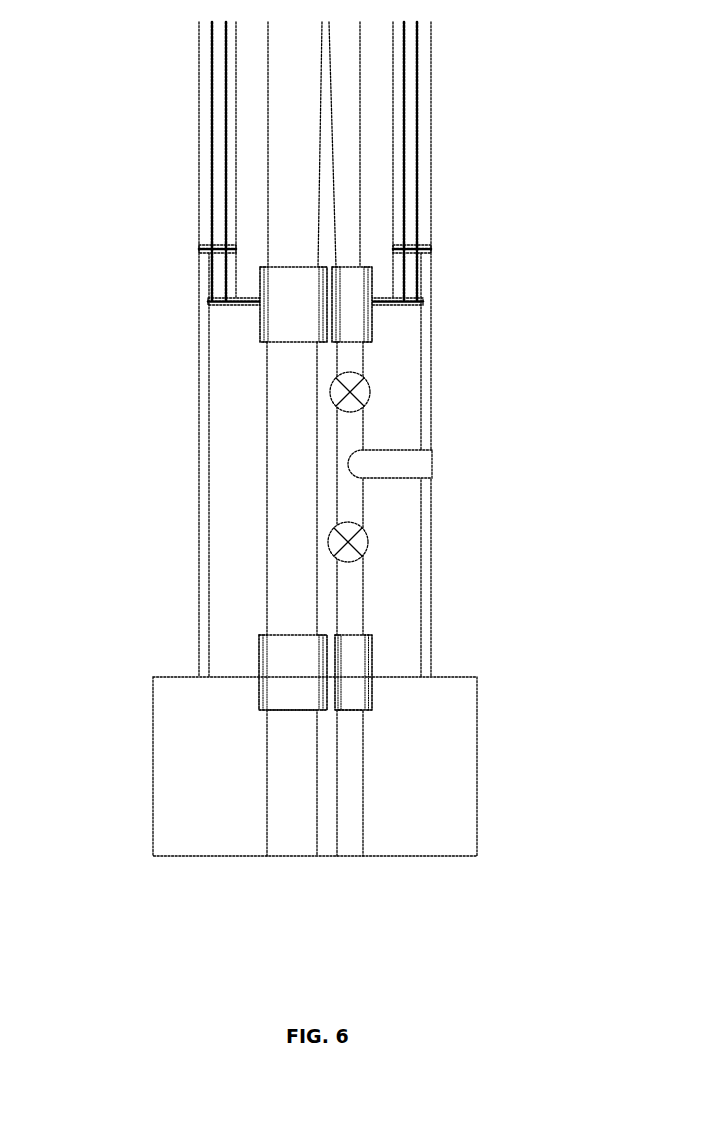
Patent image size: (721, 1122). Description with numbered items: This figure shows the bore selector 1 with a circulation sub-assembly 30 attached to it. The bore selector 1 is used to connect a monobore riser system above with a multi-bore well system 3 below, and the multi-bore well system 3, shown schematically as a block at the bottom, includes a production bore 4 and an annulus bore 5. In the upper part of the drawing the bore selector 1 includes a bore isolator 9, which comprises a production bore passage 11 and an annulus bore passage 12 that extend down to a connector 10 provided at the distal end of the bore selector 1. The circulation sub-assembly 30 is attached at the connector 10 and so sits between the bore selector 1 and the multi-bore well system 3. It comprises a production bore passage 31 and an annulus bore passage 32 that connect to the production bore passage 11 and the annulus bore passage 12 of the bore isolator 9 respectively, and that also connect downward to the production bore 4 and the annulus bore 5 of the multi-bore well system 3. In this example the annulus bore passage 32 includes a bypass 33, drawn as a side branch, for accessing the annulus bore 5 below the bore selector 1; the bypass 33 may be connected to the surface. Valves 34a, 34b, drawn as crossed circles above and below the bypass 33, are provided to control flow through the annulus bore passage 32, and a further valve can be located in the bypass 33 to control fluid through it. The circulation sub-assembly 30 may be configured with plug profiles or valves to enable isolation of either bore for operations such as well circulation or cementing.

The bore selector 1 is at (468, 110).
The multi-bore well system 3 is at (172, 765).
The production bore 4 is at (292, 818).
The annulus bore 5 is at (344, 827).
The bore isolator 9 is at (248, 130).
The connector 10 is at (200, 282).
The production bore passage 11 is at (250, 205).
The annulus bore passage 12 is at (353, 182).
The circulation sub-assembly 30 is at (135, 462).
The production bore passage 31 is at (277, 400).
The annulus bore passage 32 is at (352, 353).
The bypass 33 is at (398, 462).
The valve 34a is at (370, 397).
The valve 34b is at (365, 537).